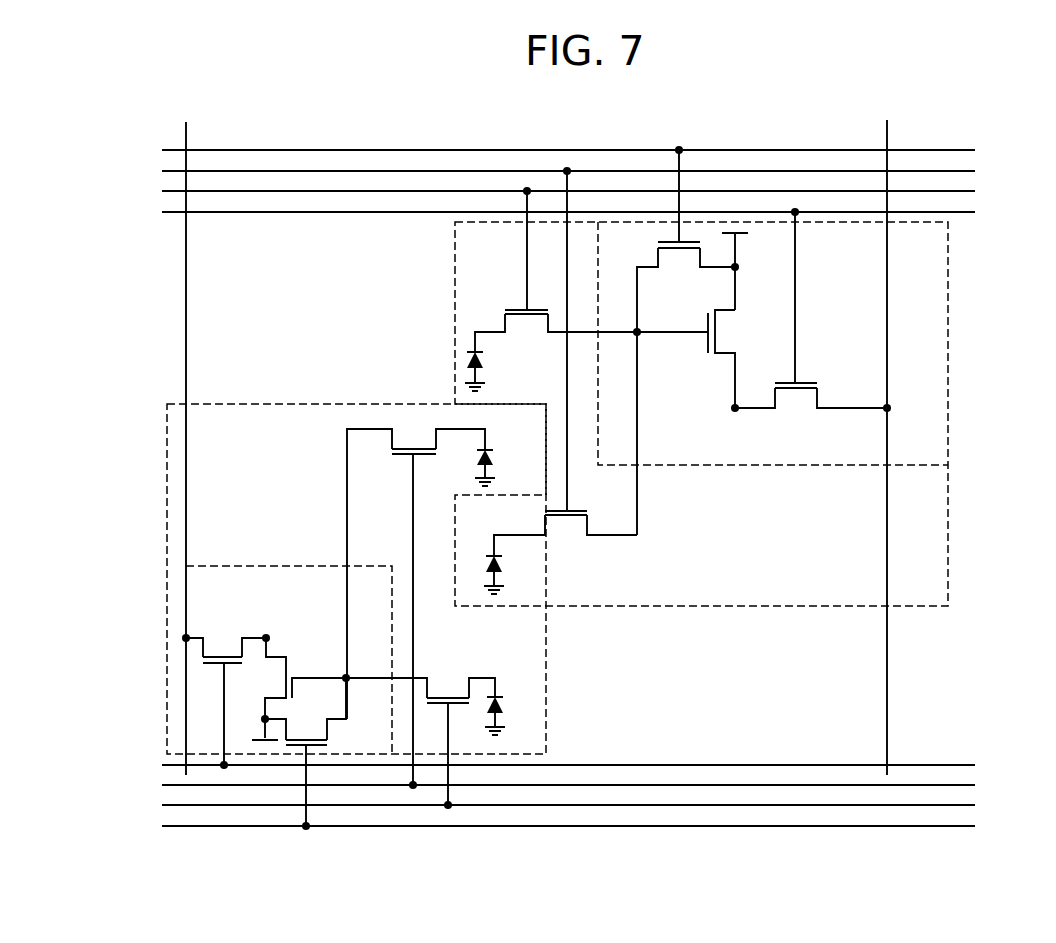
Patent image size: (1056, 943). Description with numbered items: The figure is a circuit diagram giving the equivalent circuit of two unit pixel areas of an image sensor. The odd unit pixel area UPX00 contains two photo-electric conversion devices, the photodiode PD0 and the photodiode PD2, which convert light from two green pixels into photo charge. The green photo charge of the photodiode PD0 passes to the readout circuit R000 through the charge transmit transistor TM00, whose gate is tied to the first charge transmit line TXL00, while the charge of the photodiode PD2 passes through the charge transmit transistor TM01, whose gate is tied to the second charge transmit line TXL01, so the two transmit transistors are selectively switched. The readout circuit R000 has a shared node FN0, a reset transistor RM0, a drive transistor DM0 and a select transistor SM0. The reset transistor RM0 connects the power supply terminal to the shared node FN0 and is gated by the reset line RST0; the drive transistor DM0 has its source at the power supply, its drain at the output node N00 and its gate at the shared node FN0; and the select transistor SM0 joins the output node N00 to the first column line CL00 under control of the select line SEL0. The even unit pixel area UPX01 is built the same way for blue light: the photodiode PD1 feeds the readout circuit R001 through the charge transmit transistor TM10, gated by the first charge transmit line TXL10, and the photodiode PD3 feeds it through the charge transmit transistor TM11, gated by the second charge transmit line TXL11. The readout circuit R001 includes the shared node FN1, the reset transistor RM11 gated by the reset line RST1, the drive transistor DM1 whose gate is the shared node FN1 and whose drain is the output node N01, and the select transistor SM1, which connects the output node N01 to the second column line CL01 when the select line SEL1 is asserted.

The second column line CL01 is at (186, 124).
The first column line CL00 is at (887, 122).
The reset line RST0 is at (594, 150).
The second charge transmit line TXL01 is at (599, 170).
The first charge transmit line TXL00 is at (599, 190).
The select line SEL0 is at (593, 212).
The select line SEL1 is at (593, 765).
The first charge transmit line TXL10 is at (599, 785).
The second charge transmit line TXL11 is at (599, 805).
The reset line RST1 is at (594, 826).
The odd unit pixel area UPX00 is at (455, 272).
The even unit pixel area UPX01 is at (273, 403).
The readout circuit R000 is at (762, 466).
The readout circuit R001 is at (260, 566).
The reset transistor RM0 is at (681, 342).
The drive transistor DM0 is at (703, 359).
The shared node FN0 is at (638, 334).
The select transistor SM0 is at (813, 325).
The output node N00 is at (733, 410).
The charge transmit transistor TM00 is at (554, 271).
The photodiode PD0 is at (495, 371).
The charge transmit transistor TM01 is at (565, 363).
The photodiode PD2 is at (513, 575).
The charge transmit transistor TM10 is at (416, 596).
The photodiode PD1 is at (504, 468).
The select transistor SM1 is at (224, 691).
The output node N01 is at (266, 636).
The drive transistor DM1 is at (339, 689).
The shared node FN1 is at (347, 676).
The reset transistor RM11 is at (323, 752).
The charge transmit transistor TM11 is at (420, 729).
The photodiode PD3 is at (513, 716).